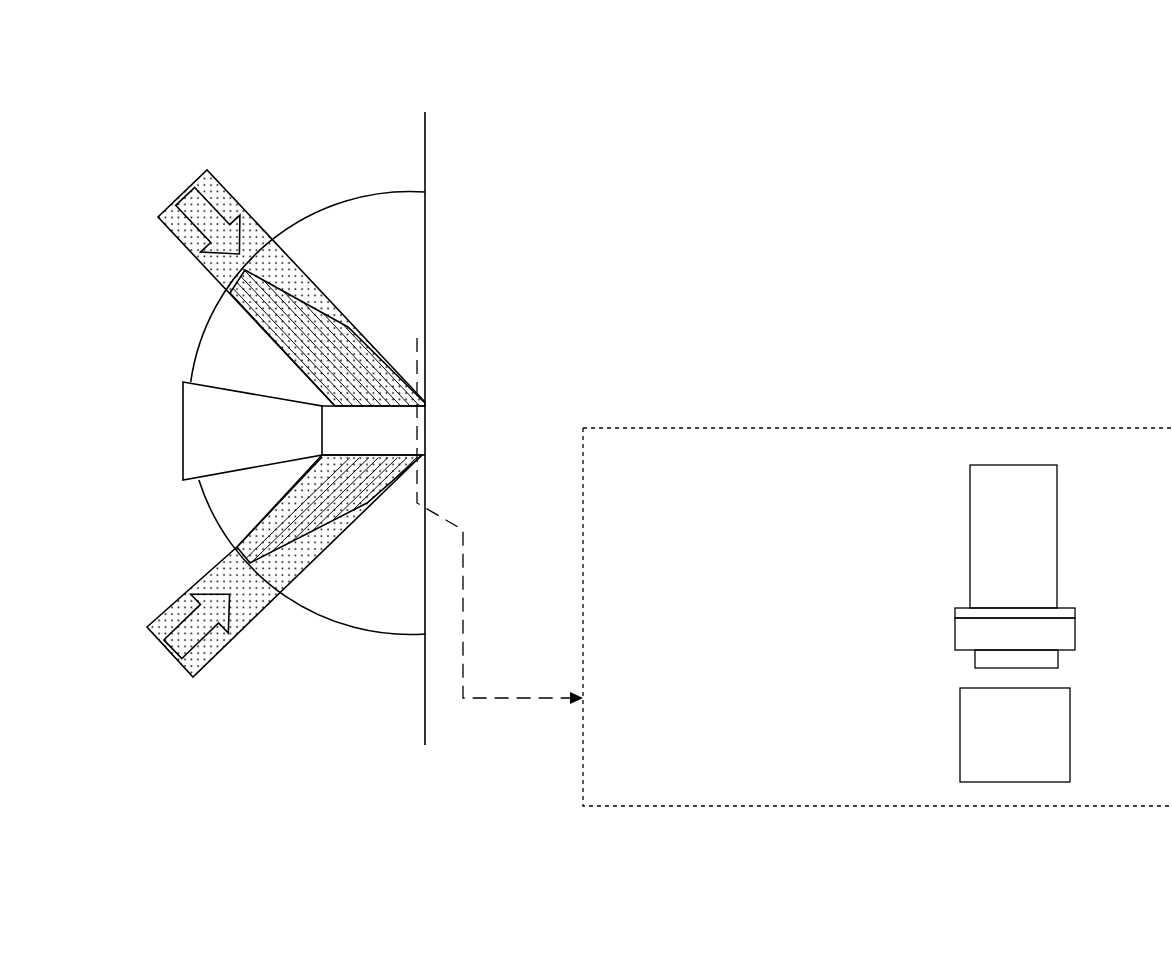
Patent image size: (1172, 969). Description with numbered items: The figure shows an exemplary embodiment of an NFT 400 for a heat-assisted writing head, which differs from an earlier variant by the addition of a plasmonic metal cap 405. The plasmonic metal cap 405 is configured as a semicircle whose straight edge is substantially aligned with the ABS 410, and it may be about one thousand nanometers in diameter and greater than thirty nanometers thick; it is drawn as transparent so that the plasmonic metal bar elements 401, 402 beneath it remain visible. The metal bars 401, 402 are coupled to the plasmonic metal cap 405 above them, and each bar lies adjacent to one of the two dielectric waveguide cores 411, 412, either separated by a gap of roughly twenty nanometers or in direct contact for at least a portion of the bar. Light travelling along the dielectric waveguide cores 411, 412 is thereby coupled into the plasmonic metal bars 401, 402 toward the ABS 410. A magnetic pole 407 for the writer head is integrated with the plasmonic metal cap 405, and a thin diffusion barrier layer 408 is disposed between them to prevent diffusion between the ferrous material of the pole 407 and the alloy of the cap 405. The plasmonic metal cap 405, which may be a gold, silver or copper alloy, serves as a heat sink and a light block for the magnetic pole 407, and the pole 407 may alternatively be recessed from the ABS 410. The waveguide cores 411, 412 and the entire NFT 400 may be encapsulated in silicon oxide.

The NFT 400 is at (100, 62).
The plasmonic metal bar element 401 is at (250, 317).
The plasmonic metal bar element 402 is at (298, 538).
The plasmonic metal cap 405 is at (200, 357).
The magnetic pole 407 is at (183, 461).
The diffusion barrier layer 408 is at (1075, 610).
The ABS 410 is at (427, 127).
The dielectric waveguide core 411 is at (221, 207).
The dielectric waveguide core 412 is at (246, 627).